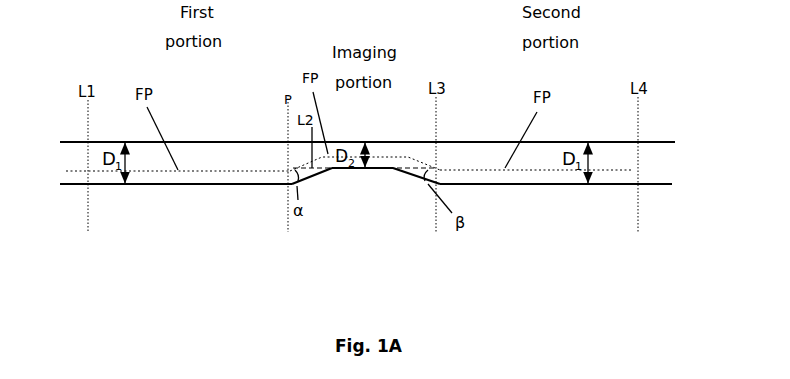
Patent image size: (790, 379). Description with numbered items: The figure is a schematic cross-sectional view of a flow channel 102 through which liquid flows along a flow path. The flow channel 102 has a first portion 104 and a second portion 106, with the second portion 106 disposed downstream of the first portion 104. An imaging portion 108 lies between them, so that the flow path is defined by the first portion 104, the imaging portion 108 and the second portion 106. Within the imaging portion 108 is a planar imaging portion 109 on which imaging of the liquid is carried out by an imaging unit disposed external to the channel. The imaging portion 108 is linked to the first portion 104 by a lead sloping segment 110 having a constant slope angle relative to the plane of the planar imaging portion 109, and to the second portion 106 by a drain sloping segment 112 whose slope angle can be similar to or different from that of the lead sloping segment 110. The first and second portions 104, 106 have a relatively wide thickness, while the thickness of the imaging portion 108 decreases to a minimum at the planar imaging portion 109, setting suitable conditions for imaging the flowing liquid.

The flow channel 102 is at (222, 108).
The first portion 104 is at (215, 174).
The second portion 106 is at (530, 170).
The imaging portion 108 is at (378, 145).
The planar imaging portion 109 is at (367, 168).
The lead sloping segment 110 is at (313, 178).
The drain sloping segment 112 is at (412, 178).